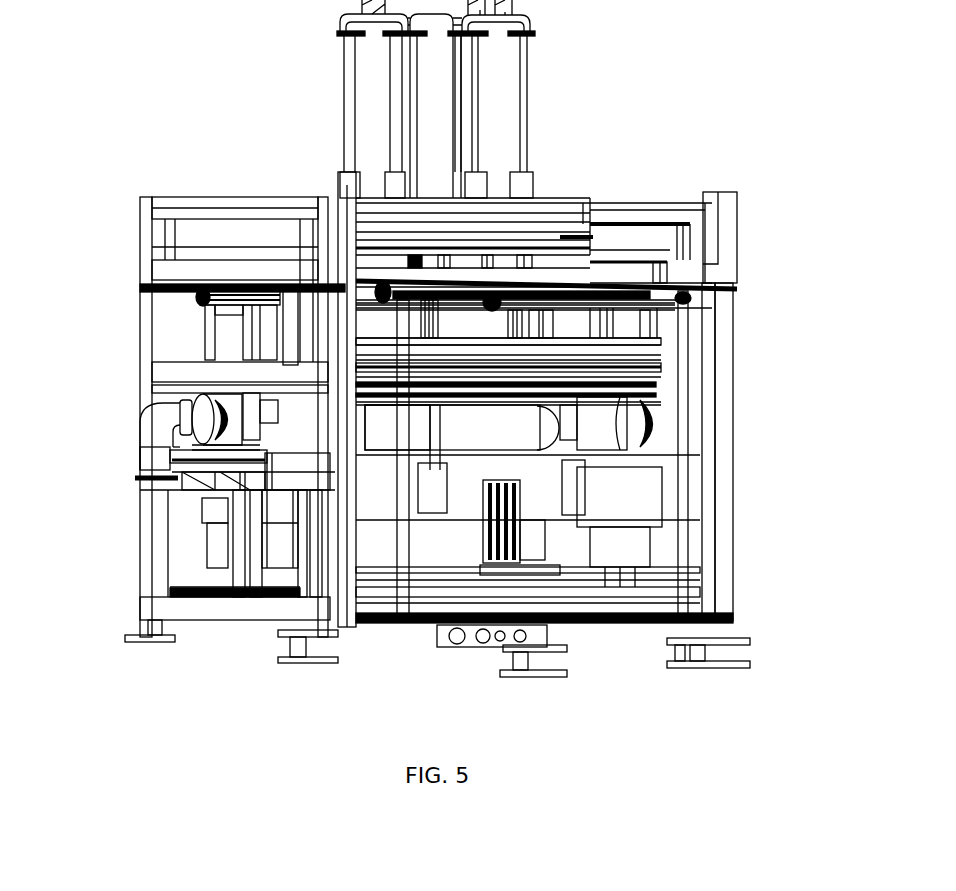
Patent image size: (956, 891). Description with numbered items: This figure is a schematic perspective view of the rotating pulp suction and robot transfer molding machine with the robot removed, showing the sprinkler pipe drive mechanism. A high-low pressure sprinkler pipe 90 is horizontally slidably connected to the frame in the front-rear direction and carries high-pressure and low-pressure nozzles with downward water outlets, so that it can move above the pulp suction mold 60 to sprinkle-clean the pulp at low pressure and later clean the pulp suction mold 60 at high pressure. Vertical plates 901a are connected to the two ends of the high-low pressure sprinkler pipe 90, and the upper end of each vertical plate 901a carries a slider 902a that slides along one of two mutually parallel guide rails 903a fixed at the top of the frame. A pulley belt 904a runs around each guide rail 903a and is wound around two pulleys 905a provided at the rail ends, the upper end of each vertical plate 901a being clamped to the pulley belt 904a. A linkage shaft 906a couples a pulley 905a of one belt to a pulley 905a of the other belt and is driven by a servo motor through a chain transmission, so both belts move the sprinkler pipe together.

The vertical plate 901a is at (253, 282).
The slider 902a is at (288, 282).
The guide rail 903a is at (222, 283).
The pulley belt 904a is at (227, 303).
The pulley 905a is at (200, 297).
The linkage shaft 906a is at (468, 287).
The high-low pressure sprinkler pipe 90 is at (573, 347).
The pulp suction mold 60 is at (488, 368).